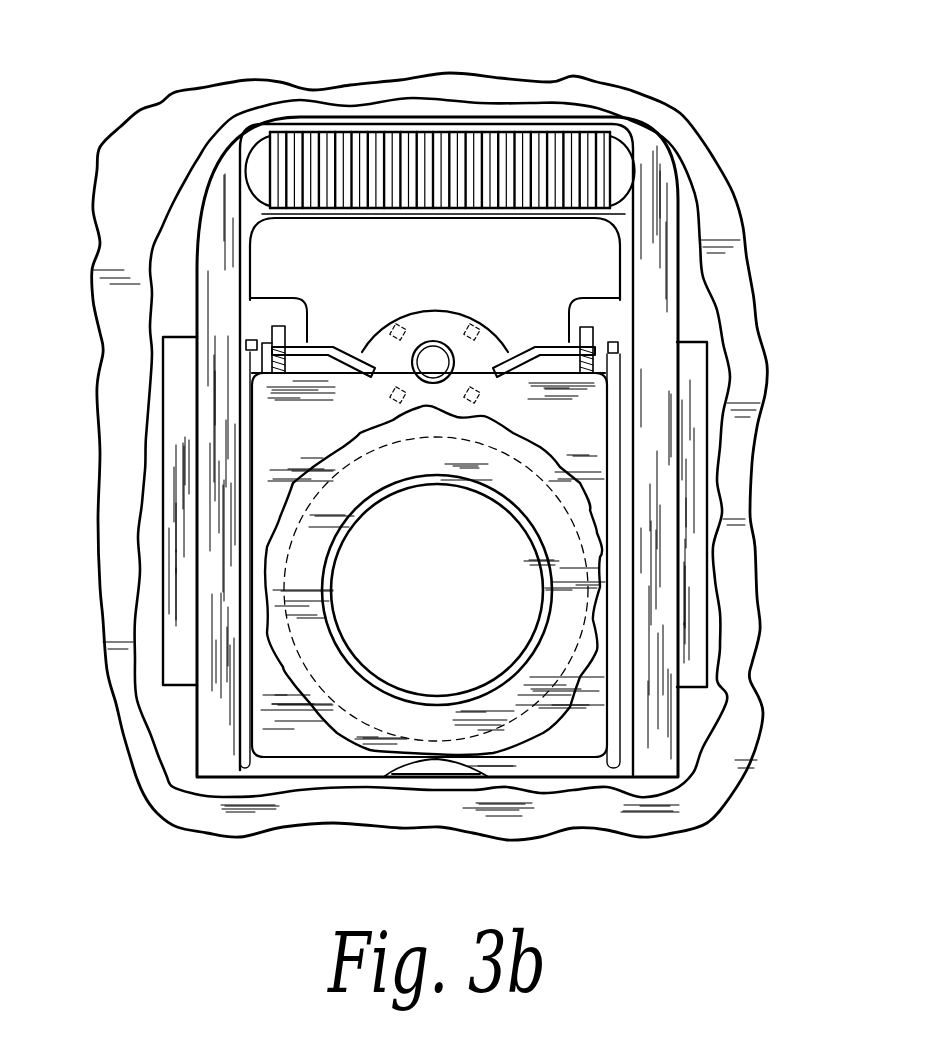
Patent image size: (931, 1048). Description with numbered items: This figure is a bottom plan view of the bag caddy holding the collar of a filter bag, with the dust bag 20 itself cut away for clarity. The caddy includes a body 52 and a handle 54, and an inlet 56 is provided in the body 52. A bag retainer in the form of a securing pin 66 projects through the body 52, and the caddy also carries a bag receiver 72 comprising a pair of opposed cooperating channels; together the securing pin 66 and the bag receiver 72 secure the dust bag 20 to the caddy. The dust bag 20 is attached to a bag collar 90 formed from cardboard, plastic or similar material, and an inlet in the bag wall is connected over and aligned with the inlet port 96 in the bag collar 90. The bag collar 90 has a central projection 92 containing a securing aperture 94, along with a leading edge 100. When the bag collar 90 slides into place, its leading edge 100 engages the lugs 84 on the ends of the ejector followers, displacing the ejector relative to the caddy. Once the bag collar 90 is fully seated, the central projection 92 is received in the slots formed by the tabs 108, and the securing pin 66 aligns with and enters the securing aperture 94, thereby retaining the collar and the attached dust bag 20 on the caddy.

The dust bag 20 is at (741, 537).
The body 52 is at (198, 777).
The handle 54 is at (563, 160).
The inlet 56 is at (343, 588).
The securing pin 66 is at (435, 360).
The bag receiver 72 is at (210, 750).
The lug 84 is at (265, 343).
The bag collar 90 is at (321, 752).
The central projection 92 is at (423, 328).
The securing aperture 94 is at (506, 352).
The inlet port 96 is at (483, 682).
The leading edge 100 is at (577, 362).
The tabs 108 is at (355, 352).